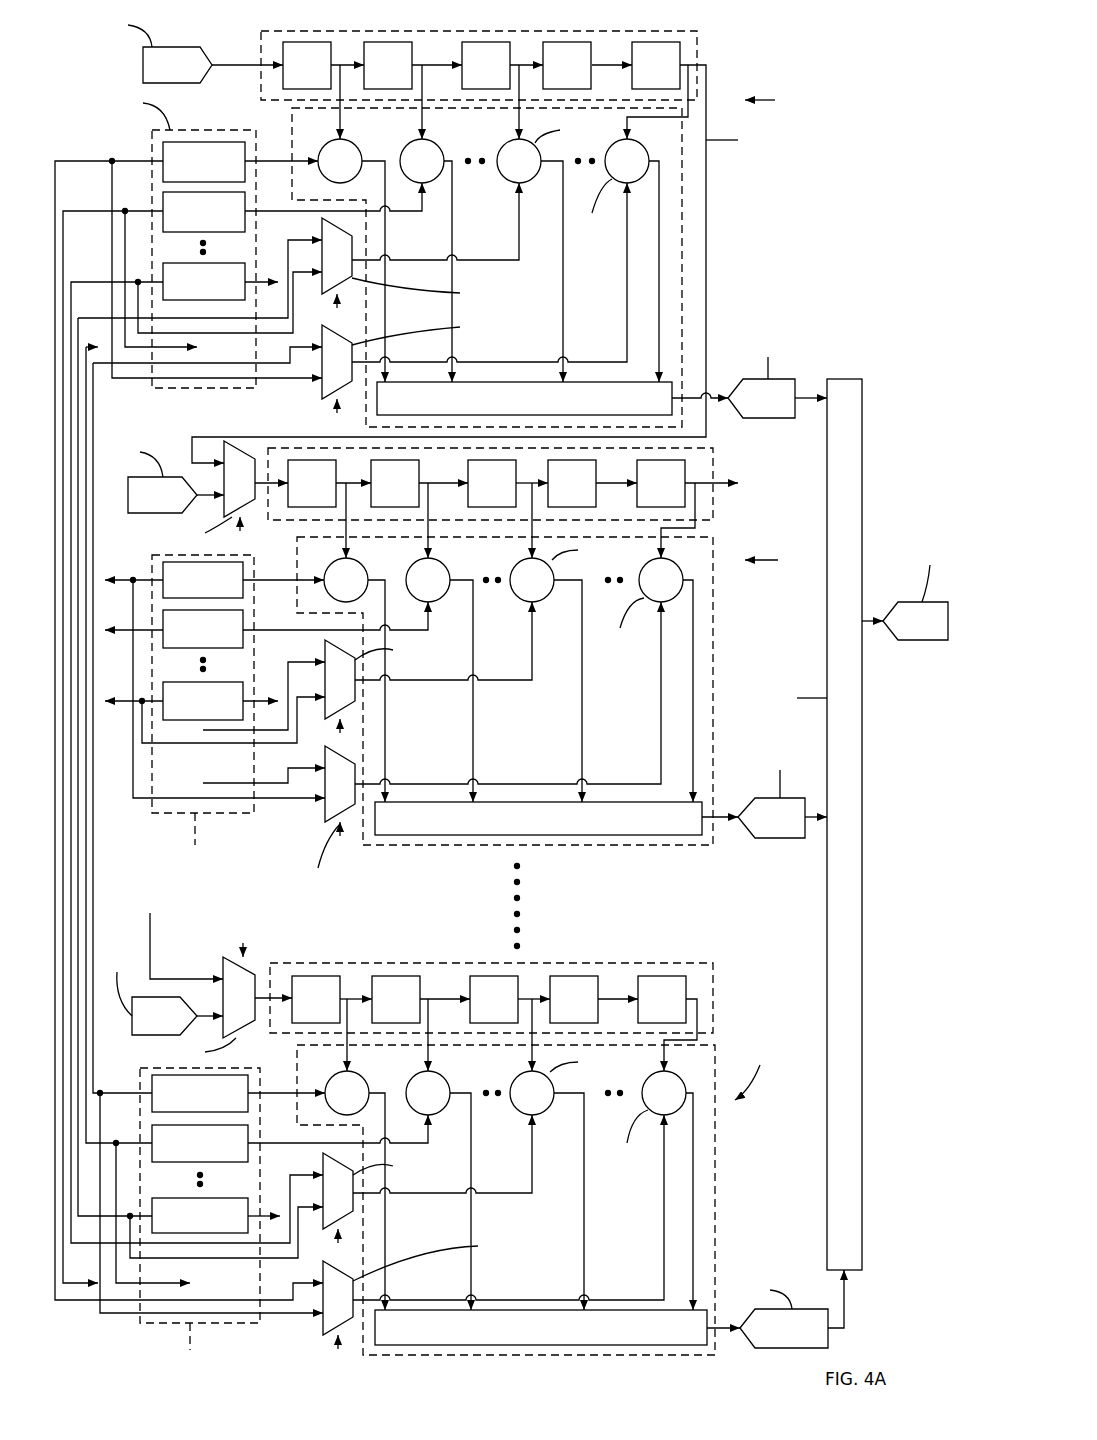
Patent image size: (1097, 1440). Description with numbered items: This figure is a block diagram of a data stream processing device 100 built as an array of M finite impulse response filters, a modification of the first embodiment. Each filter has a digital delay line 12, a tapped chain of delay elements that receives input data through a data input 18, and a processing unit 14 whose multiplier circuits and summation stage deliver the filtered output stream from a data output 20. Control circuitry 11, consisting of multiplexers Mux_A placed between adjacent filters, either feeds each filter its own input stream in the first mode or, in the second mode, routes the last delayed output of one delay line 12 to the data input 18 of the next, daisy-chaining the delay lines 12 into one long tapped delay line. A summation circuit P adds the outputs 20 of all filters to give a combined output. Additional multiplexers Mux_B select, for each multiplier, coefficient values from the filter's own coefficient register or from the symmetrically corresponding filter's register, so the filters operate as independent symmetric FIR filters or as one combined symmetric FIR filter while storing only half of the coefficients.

The data stream processing device 100 is at (501, 697).
The digital delay line 12 is at (697, 38).
The processing unit 14 is at (682, 265).
The data input 18 is at (262, 65).
The data output 20 is at (680, 412).
The control circuitry 11 is at (177, 450).